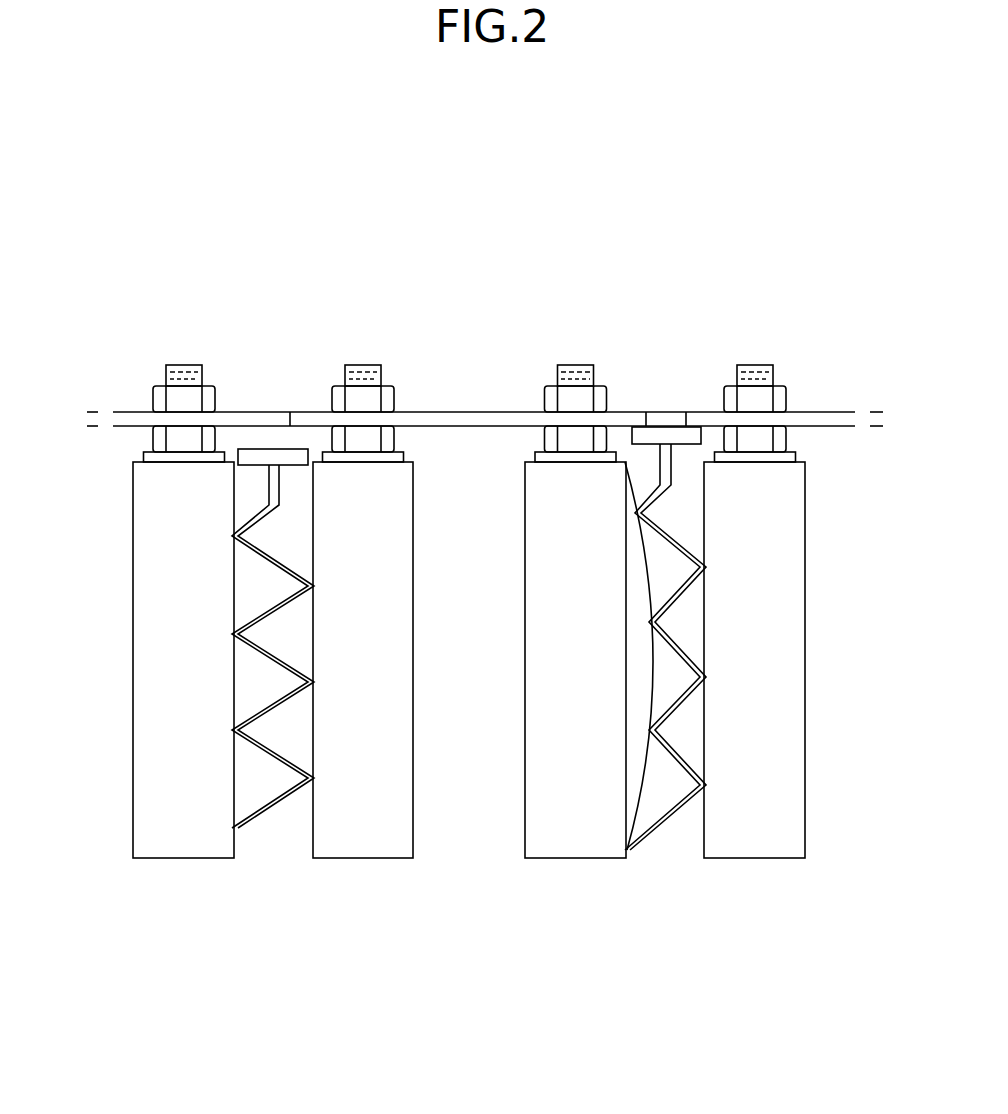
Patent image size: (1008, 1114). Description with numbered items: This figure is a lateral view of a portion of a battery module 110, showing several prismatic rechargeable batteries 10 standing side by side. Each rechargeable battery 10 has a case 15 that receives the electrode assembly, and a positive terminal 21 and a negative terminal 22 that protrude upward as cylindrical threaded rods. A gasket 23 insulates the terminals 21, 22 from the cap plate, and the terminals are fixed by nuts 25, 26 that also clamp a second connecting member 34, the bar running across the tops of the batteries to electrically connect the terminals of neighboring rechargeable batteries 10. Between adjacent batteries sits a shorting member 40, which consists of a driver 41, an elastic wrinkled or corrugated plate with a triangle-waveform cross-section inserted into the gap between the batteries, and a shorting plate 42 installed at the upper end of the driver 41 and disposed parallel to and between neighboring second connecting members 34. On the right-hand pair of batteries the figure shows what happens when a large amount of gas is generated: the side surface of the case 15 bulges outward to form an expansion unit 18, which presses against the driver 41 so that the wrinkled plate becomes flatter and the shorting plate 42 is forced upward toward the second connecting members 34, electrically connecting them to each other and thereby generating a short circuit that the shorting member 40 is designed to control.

The battery module 110 is at (680, 217).
The rechargeable battery 10 is at (165, 865).
The case 15 is at (562, 840).
The expansion unit 18 is at (640, 695).
The positive terminal 21 is at (363, 368).
The negative terminal 22 is at (574, 368).
The gasket 23 is at (148, 458).
The nut 25 is at (162, 443).
The nut 26 is at (340, 400).
The second connecting member 34 is at (464, 418).
The shorting member 40 is at (474, 699).
The driver 41 is at (240, 634).
The shorting plate 42 is at (267, 457).